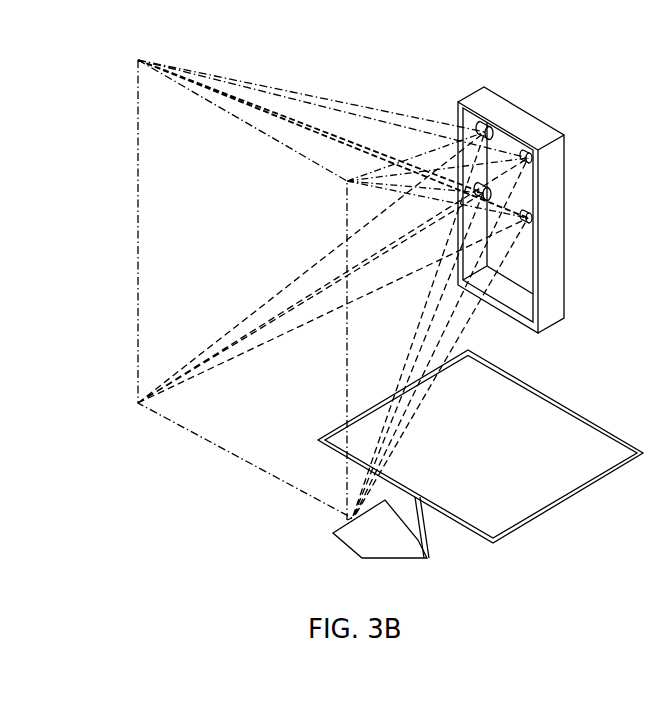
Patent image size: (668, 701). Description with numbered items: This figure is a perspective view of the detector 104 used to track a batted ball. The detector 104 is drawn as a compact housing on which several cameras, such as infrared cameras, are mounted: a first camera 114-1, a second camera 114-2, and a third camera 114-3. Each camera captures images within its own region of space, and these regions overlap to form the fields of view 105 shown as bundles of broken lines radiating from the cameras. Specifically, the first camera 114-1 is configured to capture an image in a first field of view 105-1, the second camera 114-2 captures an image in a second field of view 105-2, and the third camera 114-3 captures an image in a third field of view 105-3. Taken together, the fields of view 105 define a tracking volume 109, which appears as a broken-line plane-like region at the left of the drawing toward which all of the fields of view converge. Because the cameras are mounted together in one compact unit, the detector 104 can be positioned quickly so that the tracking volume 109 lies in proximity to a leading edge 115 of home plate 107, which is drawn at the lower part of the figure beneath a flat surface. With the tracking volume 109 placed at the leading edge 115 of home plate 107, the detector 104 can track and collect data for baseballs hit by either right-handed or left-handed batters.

The detector 104 is at (566, 147).
The field of views 105 is at (227, 70).
The first field of view 105-1 is at (284, 90).
The second field of view 105-2 is at (506, 152).
The third field of view 105-3 is at (484, 306).
The home plate 107 is at (338, 540).
The tracking volume 109 is at (128, 86).
The first camera 114-1 is at (490, 127).
The second camera 114-2 is at (534, 162).
The third camera 114-3 is at (534, 222).
The leading edge 115 is at (313, 524).